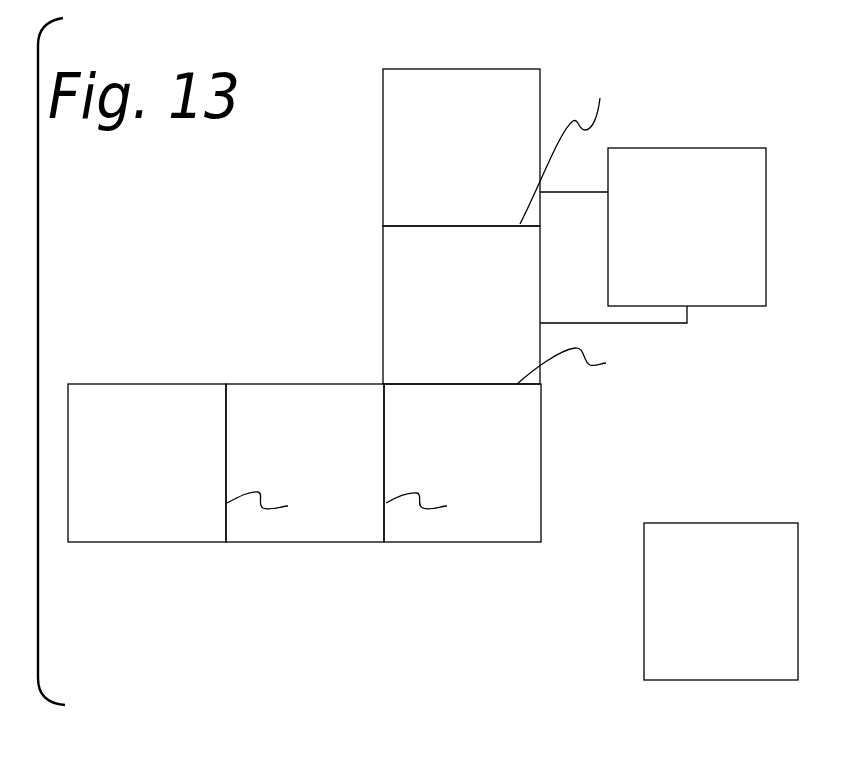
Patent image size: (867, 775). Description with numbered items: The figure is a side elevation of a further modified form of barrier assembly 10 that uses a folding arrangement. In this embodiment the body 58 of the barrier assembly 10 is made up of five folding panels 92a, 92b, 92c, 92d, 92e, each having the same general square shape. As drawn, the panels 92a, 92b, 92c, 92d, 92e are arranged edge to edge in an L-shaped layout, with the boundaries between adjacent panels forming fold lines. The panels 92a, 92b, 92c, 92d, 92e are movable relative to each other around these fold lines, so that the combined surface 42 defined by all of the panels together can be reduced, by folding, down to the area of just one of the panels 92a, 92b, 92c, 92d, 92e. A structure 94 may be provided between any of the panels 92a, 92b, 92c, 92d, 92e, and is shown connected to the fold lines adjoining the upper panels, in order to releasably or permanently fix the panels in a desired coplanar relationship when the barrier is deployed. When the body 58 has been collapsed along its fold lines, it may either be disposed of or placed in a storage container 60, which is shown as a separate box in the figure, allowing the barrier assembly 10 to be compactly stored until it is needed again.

The barrier assembly 10 is at (318, 277).
The combined surface 42 is at (396, 148).
The body 58 is at (462, 510).
The storage container 60 is at (740, 649).
The folding panel 92a is at (443, 160).
The folding panel 92b is at (443, 320).
The folding panel 92c is at (446, 478).
The folding panel 92d is at (286, 478).
The folding panel 92e is at (126, 476).
The structure 94 is at (675, 268).